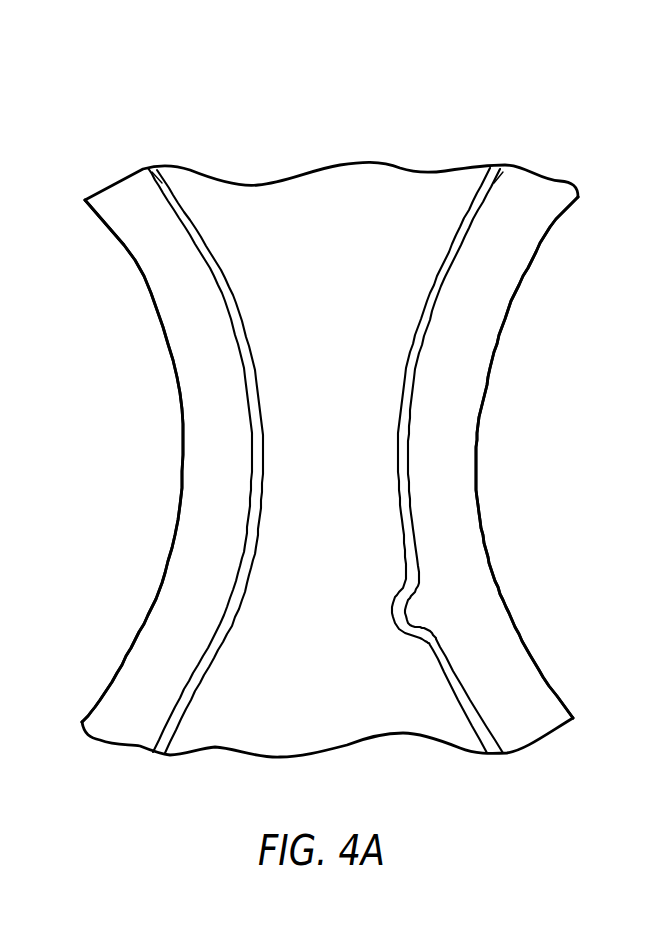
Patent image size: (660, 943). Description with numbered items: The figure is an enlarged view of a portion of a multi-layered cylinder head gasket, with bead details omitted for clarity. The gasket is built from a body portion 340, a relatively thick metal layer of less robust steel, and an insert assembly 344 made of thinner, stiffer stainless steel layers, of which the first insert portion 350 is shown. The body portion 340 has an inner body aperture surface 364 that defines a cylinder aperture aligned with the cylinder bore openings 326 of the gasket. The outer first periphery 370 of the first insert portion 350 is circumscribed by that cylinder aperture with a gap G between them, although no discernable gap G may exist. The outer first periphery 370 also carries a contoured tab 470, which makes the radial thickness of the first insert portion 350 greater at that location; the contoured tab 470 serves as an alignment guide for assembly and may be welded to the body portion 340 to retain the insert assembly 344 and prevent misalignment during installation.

The cylinder bore opening 326 is at (106, 489).
The body portion 340 is at (343, 213).
The insert assembly 344 is at (136, 275).
The first insert portion 350 is at (195, 321).
The inner body aperture surface 364 is at (256, 387).
The outer first periphery 370 is at (474, 211).
The contoured tab 470 is at (417, 613).
The gap G is at (153, 170).